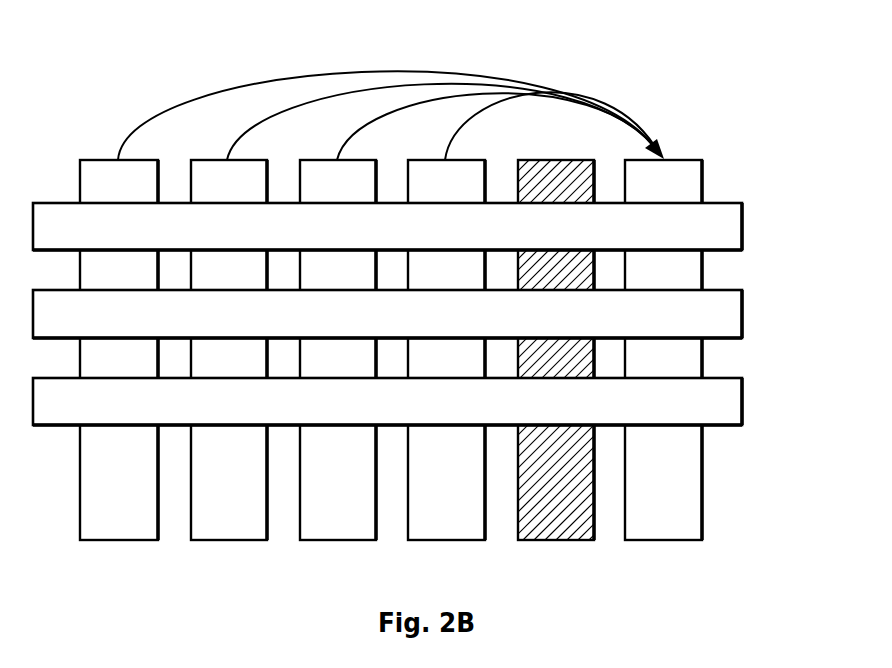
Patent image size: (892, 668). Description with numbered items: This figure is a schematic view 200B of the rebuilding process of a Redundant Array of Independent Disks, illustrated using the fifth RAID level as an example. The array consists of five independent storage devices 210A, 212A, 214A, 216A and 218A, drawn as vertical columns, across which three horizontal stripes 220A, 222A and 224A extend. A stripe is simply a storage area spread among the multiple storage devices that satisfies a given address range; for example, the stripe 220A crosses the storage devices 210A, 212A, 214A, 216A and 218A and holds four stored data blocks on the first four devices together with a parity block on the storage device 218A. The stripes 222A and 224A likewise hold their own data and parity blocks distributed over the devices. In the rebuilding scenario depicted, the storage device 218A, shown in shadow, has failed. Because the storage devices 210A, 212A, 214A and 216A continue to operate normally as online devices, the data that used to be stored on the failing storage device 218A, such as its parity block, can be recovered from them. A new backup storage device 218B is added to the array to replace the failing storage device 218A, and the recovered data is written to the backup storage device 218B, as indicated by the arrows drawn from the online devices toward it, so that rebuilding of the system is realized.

The schematic view of rebuilding process 200B is at (139, 95).
The storage device 210A is at (131, 160).
The storage device 212A is at (242, 160).
The storage device 214A is at (352, 160).
The storage device 216A is at (463, 160).
The failing storage device 218A is at (572, 160).
The backup storage device 218B is at (680, 160).
The stripe 220A is at (742, 218).
The stripe 222A is at (742, 305).
The stripe 224A is at (742, 393).